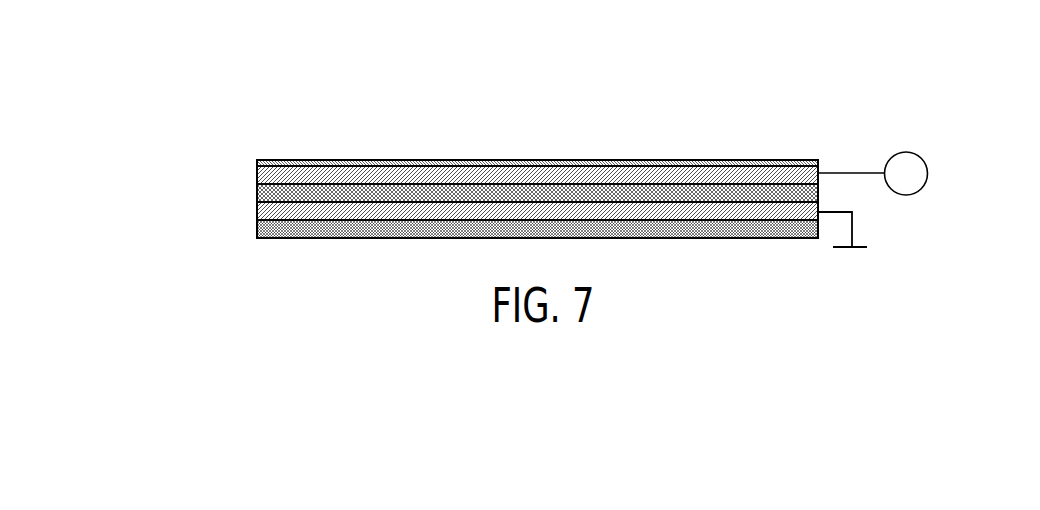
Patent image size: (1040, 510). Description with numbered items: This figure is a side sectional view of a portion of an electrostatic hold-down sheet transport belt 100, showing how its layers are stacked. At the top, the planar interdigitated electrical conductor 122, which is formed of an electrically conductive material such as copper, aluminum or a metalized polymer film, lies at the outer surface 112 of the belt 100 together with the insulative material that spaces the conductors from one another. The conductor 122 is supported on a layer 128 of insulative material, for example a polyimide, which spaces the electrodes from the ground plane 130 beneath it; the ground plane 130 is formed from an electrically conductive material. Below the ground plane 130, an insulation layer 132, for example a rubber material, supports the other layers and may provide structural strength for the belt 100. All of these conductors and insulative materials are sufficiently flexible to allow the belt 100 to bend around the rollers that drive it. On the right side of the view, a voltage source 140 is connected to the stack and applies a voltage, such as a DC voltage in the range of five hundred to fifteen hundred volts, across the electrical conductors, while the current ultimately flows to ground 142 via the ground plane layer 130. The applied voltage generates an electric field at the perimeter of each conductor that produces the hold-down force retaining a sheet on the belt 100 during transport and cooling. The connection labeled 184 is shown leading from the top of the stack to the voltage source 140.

The belt 100 is at (228, 92).
The outer surface 112 is at (430, 145).
The electrical conductor 122 is at (257, 170).
The layer of insulative material 128 is at (257, 194).
The ground plane 130 is at (257, 212).
The insulation layer 132 is at (257, 235).
The voltage source 140 is at (937, 147).
The ground 142 is at (878, 237).
The electrical contact 184 is at (820, 165).